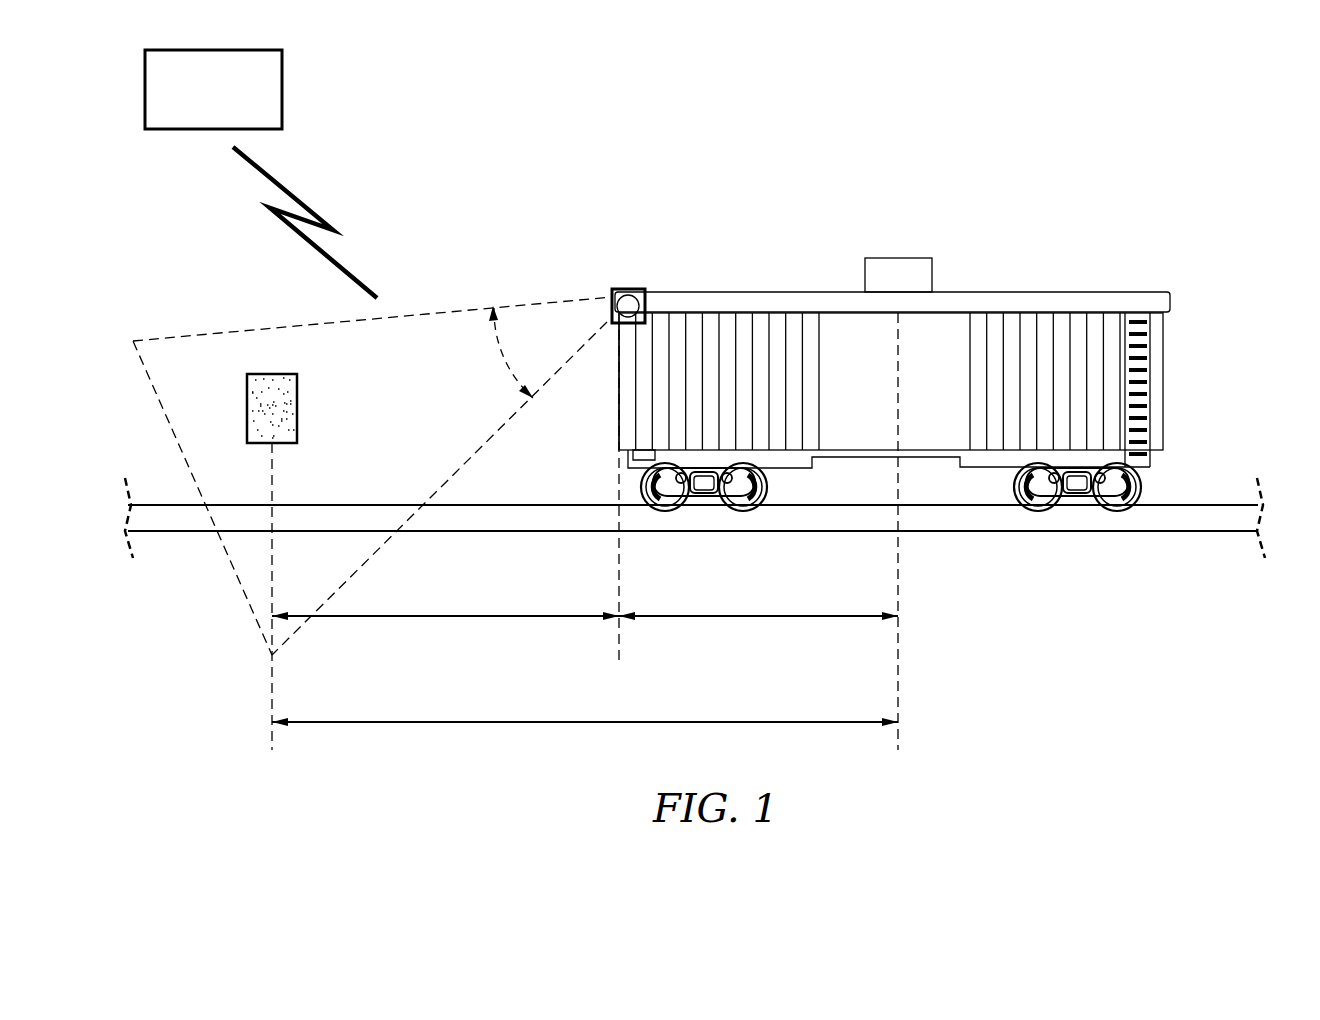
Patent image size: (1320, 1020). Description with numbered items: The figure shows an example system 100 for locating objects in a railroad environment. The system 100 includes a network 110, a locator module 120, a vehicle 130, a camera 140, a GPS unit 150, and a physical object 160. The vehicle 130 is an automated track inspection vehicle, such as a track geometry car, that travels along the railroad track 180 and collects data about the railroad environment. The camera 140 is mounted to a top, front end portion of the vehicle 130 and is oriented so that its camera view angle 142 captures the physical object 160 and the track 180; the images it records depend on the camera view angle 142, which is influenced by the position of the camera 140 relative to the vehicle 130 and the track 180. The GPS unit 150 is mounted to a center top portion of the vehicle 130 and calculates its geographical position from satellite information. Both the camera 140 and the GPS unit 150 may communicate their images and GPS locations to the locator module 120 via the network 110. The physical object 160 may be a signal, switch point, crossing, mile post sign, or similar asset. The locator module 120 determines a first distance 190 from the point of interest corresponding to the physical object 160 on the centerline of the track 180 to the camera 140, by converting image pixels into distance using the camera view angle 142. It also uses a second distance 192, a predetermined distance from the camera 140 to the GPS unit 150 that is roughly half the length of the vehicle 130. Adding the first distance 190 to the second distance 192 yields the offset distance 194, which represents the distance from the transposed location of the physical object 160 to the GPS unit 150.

The system 100 is at (1101, 84).
The network 110 is at (295, 197).
The locator module 120 is at (282, 87).
The vehicle 130 is at (1163, 350).
The camera 140 is at (636, 289).
The camera view angle 142 is at (493, 345).
The GPS unit 150 is at (900, 258).
The physical object 160 is at (297, 437).
The railroad track 180 is at (1075, 532).
The first distance 190 is at (447, 616).
The second distance 192 is at (752, 616).
The offset distance 194 is at (600, 722).